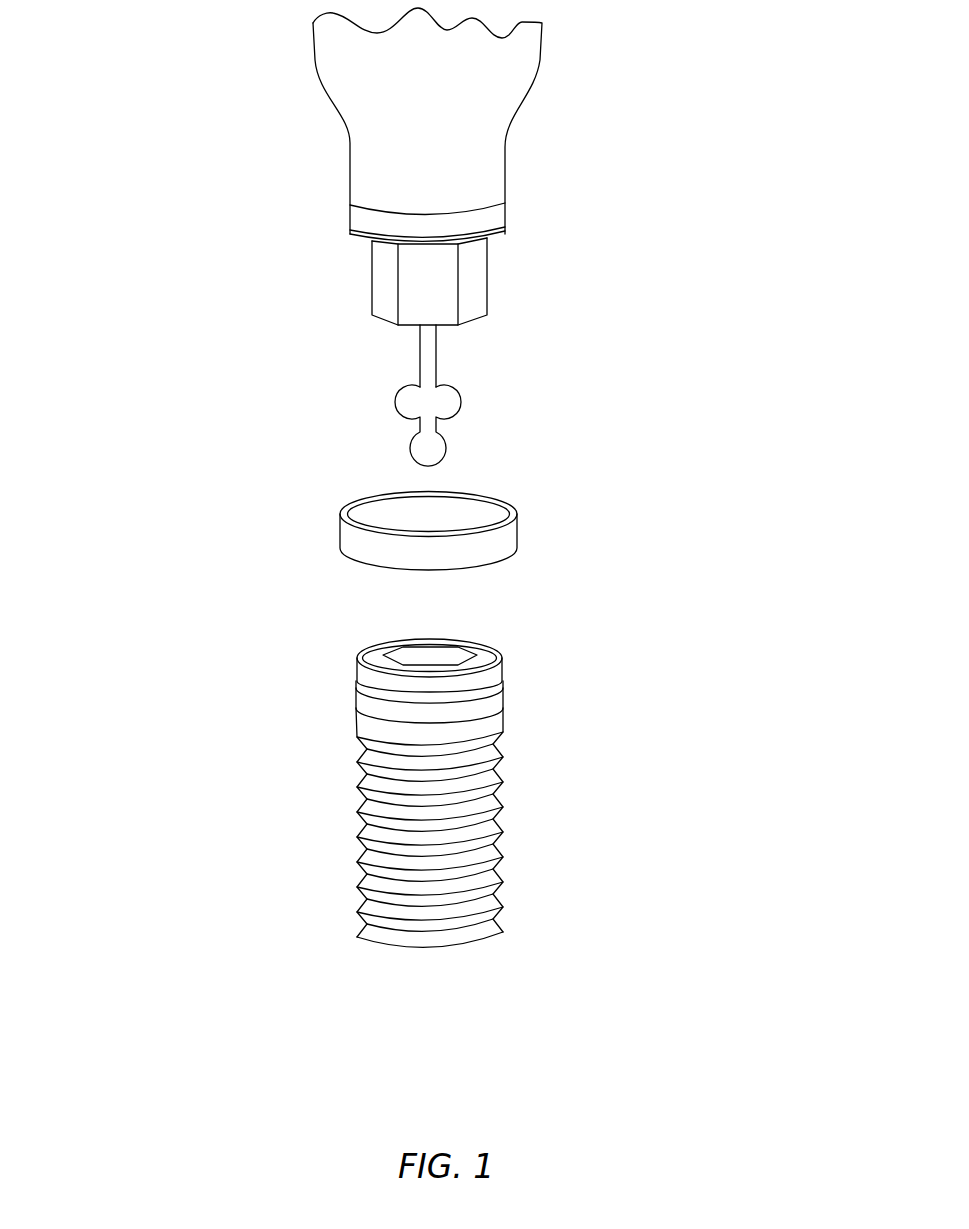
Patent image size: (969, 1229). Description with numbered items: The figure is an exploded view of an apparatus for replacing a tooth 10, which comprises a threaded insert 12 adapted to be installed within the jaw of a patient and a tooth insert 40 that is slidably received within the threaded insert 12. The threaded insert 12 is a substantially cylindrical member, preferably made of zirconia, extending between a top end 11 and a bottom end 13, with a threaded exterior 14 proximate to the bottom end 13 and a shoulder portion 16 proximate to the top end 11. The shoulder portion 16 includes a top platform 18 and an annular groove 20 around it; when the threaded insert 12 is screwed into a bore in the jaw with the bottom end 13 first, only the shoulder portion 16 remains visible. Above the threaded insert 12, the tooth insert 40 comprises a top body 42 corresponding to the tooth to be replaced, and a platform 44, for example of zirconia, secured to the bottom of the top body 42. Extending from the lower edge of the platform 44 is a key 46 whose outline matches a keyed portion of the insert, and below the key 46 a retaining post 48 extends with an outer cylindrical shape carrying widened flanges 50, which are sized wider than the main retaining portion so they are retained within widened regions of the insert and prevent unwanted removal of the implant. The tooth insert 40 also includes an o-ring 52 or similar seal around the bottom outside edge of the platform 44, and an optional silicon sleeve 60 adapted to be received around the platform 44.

The apparatus for replacing a tooth 10 is at (155, 250).
The top end 11 is at (358, 625).
The threaded insert 12 is at (542, 773).
The bottom end 13 is at (480, 960).
The threaded exterior 14 is at (498, 873).
The shoulder portion 16 is at (548, 672).
The top platform 18 is at (487, 648).
The annular groove 20 is at (338, 682).
The tooth insert 40 is at (580, 134).
The top body 42 is at (528, 83).
The platform 44 is at (505, 214).
The key 46 is at (487, 282).
The retaining post 48 is at (437, 367).
The widened flanges 50 is at (410, 448).
The o-ring 52 is at (505, 232).
The silicon sleeve 60 is at (517, 522).